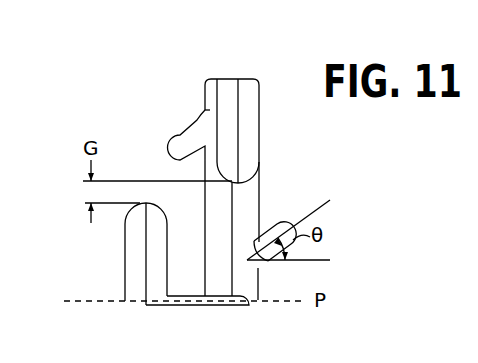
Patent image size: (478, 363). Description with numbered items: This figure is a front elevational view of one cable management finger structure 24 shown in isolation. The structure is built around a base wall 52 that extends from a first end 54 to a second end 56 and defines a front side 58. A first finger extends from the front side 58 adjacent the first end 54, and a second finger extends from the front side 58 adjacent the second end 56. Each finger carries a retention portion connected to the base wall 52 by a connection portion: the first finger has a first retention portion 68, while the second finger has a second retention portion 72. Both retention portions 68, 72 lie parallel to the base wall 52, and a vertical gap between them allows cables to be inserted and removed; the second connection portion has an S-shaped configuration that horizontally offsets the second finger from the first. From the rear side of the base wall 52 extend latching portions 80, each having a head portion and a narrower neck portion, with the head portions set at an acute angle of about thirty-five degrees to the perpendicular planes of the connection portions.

The cable management finger structure 24 is at (296, 150).
The base wall 52 is at (258, 186).
The first end 54 is at (244, 79).
The second end 56 is at (238, 305).
The front side 58 is at (232, 249).
The first retention portion 68 is at (251, 126).
The second retention portion 72 is at (125, 253).
The latching portion 80 is at (183, 140).